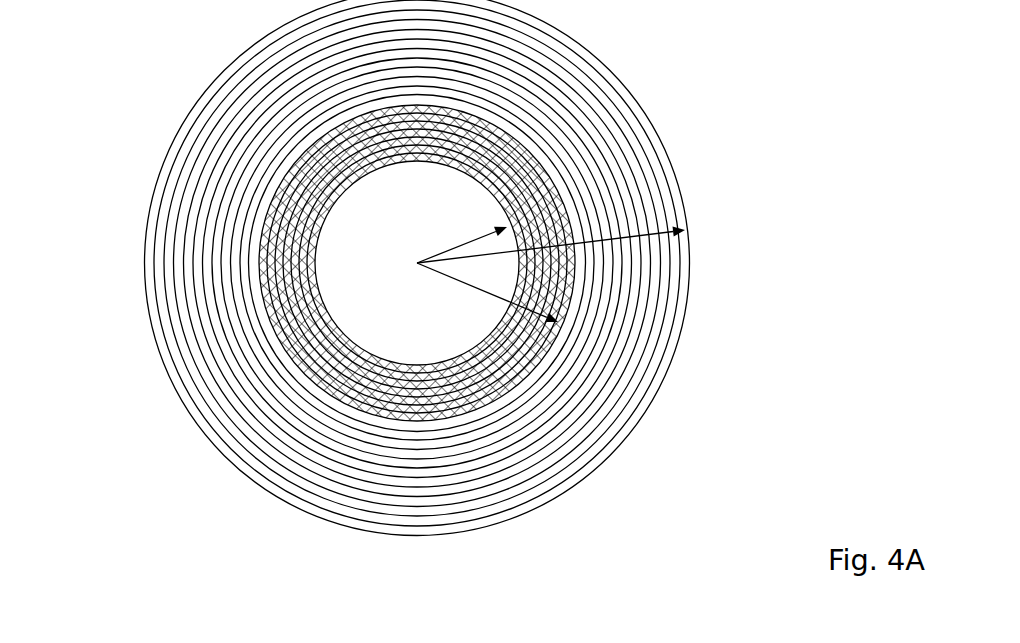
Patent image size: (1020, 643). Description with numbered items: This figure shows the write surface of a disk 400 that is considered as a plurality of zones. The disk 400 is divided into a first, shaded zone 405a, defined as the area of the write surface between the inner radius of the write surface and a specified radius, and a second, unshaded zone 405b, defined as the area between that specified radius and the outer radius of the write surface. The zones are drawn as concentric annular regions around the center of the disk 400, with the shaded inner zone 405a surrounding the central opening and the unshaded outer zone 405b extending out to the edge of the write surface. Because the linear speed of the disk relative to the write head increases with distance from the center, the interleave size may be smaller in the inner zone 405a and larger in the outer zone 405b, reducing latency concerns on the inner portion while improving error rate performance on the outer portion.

The disk 400 is at (400, 268).
The first zone 405a is at (320, 228).
The second zone 405b is at (680, 343).